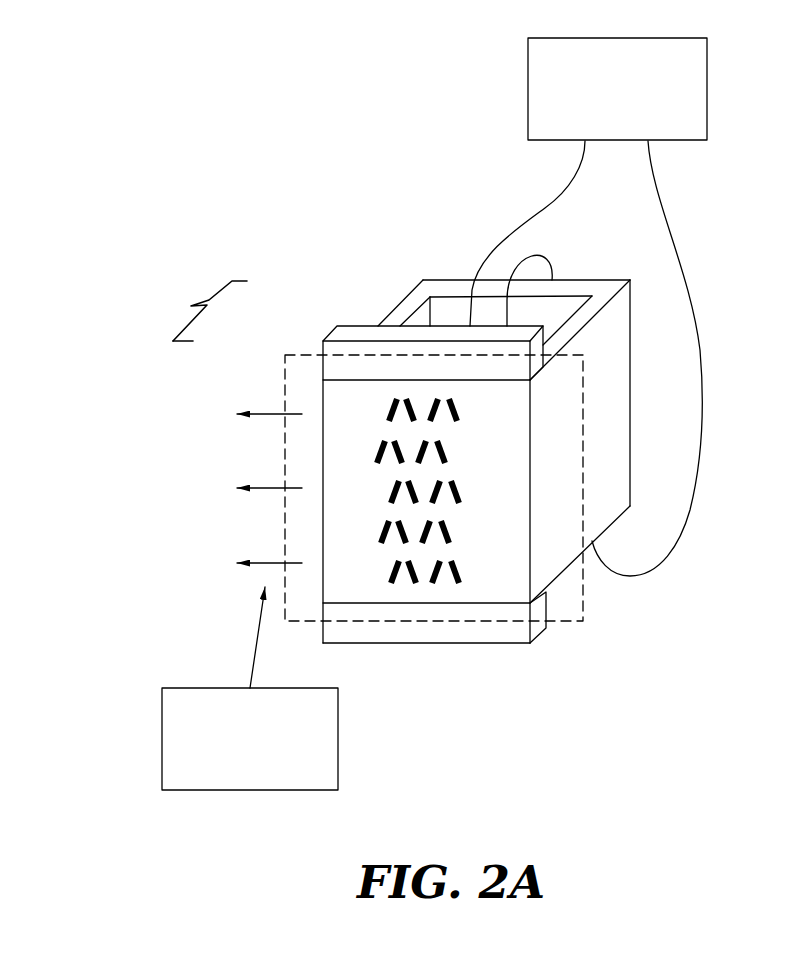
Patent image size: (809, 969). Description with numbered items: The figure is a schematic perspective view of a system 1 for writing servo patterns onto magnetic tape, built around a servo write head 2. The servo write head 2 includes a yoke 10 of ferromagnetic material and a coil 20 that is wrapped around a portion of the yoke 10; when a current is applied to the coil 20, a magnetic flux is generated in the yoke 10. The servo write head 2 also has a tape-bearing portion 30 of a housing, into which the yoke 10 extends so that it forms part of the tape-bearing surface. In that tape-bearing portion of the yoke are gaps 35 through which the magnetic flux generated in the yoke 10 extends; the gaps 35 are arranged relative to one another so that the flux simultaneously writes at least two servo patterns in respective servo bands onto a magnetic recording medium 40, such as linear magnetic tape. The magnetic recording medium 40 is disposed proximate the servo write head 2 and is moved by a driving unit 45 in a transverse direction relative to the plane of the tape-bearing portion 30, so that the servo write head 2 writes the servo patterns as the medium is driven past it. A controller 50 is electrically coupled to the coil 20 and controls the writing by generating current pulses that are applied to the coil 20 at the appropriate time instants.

The system 1 is at (140, 195).
The servo write head 2 is at (207, 311).
The yoke 10 is at (410, 303).
The coil 20 is at (475, 250).
The tape-bearing portion 30 is at (330, 348).
The gaps 35 is at (457, 490).
The magnetic recording medium 40 is at (565, 613).
The driving unit 45 is at (168, 715).
The controller 50 is at (702, 65).